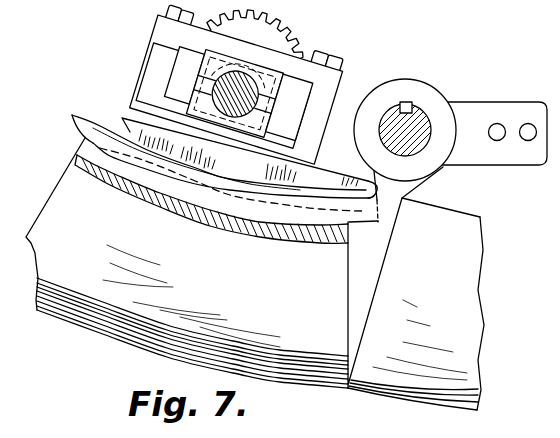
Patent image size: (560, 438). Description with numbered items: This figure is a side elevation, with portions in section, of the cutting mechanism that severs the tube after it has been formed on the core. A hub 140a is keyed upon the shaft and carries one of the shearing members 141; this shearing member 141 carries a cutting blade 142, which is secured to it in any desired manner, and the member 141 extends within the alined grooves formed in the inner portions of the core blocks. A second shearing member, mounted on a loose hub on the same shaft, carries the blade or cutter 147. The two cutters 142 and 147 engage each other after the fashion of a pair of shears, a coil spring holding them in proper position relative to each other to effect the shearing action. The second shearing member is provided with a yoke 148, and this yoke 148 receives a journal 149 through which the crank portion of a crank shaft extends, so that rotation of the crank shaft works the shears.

The yoke 148 is at (142, 78).
The journal 149 is at (289, 107).
The blade or cutter 147 is at (245, 152).
The cutting blade 142 is at (80, 127).
The hub 140a is at (427, 99).
The shearing member 141 is at (380, 223).